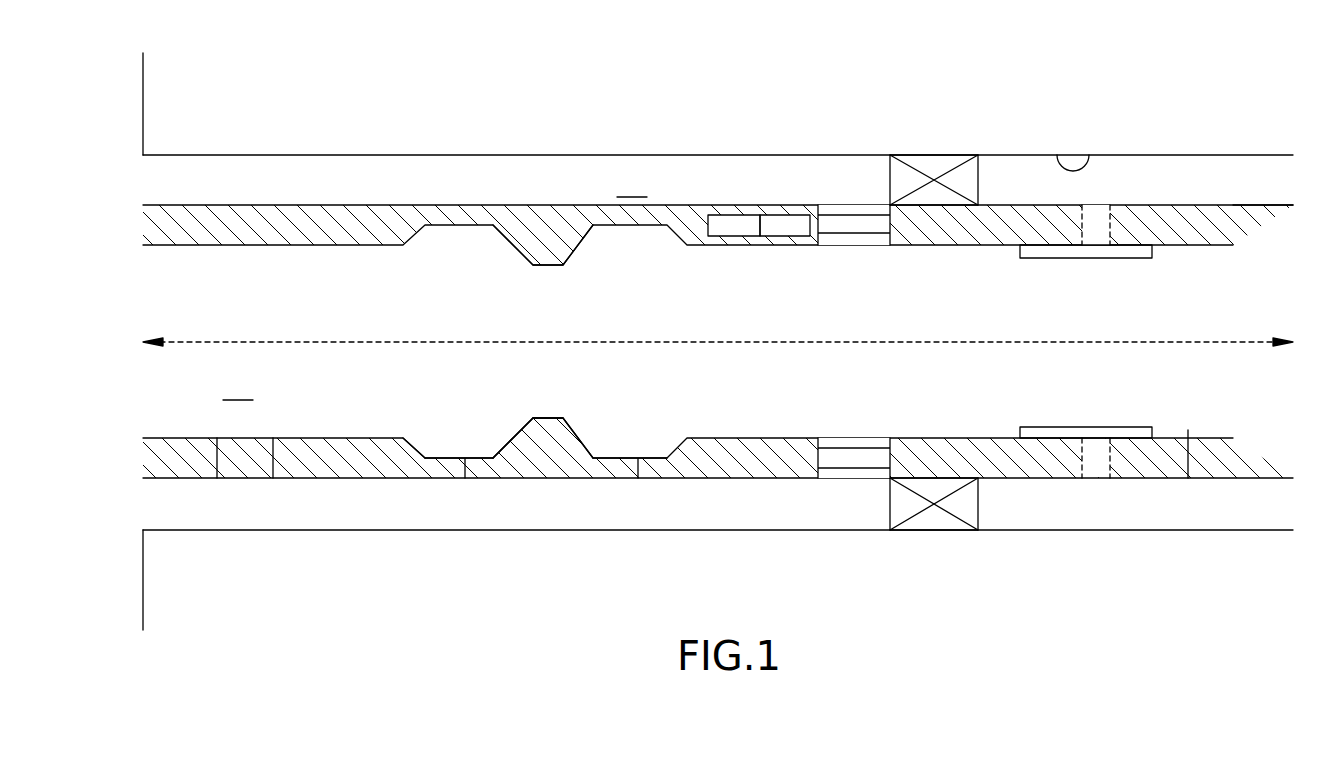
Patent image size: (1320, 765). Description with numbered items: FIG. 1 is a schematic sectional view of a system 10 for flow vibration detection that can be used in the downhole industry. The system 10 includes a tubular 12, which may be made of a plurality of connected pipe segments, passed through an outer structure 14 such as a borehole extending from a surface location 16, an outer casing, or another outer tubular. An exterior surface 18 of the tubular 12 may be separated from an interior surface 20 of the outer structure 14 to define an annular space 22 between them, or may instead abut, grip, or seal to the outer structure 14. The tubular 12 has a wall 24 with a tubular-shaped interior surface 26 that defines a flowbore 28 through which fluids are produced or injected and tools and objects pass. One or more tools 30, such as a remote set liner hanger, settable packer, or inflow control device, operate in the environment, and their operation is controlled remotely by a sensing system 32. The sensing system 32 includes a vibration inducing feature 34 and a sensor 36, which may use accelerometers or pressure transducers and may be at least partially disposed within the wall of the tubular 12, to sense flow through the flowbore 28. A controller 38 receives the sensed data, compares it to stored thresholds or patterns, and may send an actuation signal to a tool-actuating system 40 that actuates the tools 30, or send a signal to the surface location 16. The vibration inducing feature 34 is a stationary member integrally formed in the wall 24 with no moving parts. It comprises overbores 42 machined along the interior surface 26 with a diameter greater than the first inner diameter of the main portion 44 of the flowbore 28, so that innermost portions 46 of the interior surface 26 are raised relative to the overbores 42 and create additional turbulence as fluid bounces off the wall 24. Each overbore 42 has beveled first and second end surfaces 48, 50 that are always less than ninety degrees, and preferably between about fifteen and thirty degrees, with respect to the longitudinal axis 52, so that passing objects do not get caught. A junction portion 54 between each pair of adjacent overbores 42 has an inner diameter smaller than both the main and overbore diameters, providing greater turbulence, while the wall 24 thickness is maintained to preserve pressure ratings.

The system 10 is at (718, 330).
The tubular 12 is at (468, 205).
The outer structure 14 is at (365, 155).
The surface location 16 is at (143, 95).
The exterior surface 18 is at (1203, 210).
The interior surface 20 is at (1058, 155).
The annular space 22 is at (632, 184).
The wall 24 is at (1032, 460).
The interior surface 26 is at (273, 478).
The flowbore 28 is at (238, 388).
The tools 30 is at (937, 530).
The sensing system 32 is at (786, 127).
The vibration inducing feature 34 is at (513, 462).
The sensor 36 is at (733, 216).
The controller 38 is at (801, 215).
The tool-actuating system 40 is at (853, 460).
The overbores 42 is at (465, 458).
The main portion 44 is at (217, 478).
The innermost portions 46 is at (552, 265).
The first end surface 48 is at (416, 452).
The second end surface 50 is at (525, 433).
The longitudinal axis 52 is at (327, 342).
The junction portion 54 is at (552, 420).